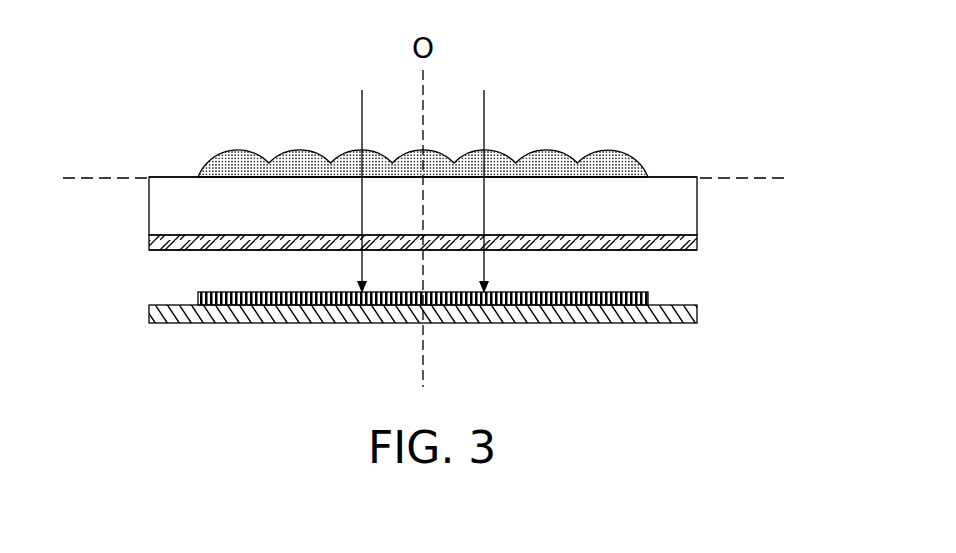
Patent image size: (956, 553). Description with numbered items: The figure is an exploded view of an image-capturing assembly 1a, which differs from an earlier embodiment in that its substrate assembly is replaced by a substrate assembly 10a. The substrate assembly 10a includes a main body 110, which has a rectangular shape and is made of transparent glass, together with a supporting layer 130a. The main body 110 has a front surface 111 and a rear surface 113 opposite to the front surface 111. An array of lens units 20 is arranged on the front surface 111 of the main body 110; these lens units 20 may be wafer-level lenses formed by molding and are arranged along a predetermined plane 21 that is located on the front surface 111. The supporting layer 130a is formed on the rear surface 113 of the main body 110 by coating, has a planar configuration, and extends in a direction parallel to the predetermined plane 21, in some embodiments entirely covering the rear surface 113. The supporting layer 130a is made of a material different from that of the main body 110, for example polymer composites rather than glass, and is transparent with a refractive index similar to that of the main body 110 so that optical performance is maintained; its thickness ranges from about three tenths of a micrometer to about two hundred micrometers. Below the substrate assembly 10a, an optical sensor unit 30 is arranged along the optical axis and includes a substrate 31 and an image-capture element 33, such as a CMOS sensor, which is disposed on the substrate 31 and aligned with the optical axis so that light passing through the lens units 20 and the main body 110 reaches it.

The image-capturing assembly 1a is at (690, 105).
The substrate assembly 10a is at (706, 170).
The main body 110 is at (690, 207).
The front surface 111 is at (166, 176).
The rear surface 113 is at (206, 253).
The supporting layer 130a is at (692, 243).
The lens units 20 is at (612, 150).
The predetermined plane 21 is at (445, 173).
The optical sensor unit 30 is at (471, 346).
The substrate 31 is at (320, 316).
The image-capture element 33 is at (260, 300).